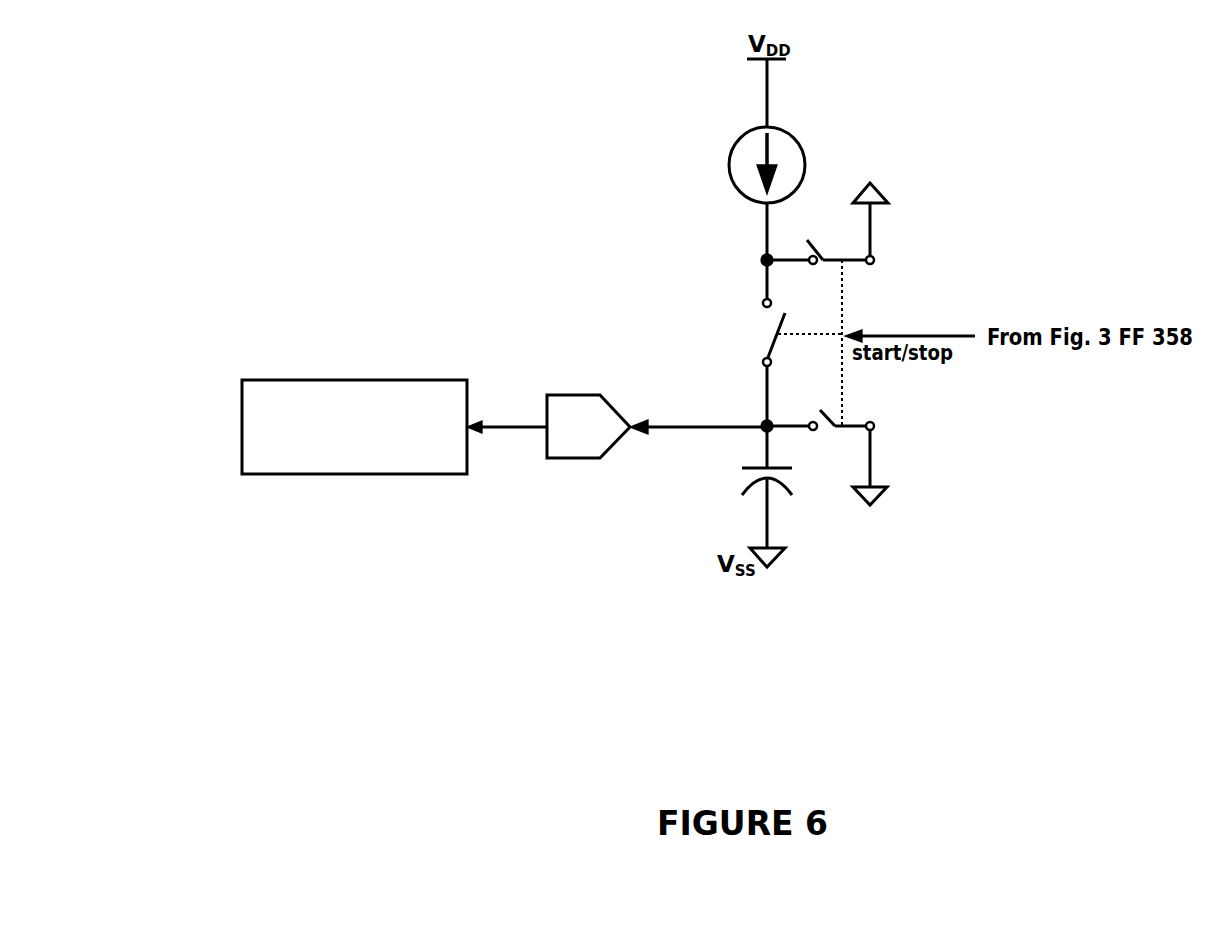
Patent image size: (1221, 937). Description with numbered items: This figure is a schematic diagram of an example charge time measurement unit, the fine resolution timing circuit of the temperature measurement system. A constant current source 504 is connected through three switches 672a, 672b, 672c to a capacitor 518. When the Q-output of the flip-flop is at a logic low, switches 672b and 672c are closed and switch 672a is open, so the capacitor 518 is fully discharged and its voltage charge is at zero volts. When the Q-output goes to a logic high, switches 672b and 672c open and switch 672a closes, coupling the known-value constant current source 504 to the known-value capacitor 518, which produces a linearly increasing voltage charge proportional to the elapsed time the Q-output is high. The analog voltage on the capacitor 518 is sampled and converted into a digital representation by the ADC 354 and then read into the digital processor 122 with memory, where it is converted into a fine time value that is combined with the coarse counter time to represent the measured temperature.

The digital processor 122 is at (297, 378).
The ADC 354 is at (577, 395).
The constant current source 504 is at (730, 163).
The capacitor 518 is at (744, 482).
The switch 672a is at (773, 345).
The switch 672b is at (827, 223).
The switch 672c is at (827, 445).